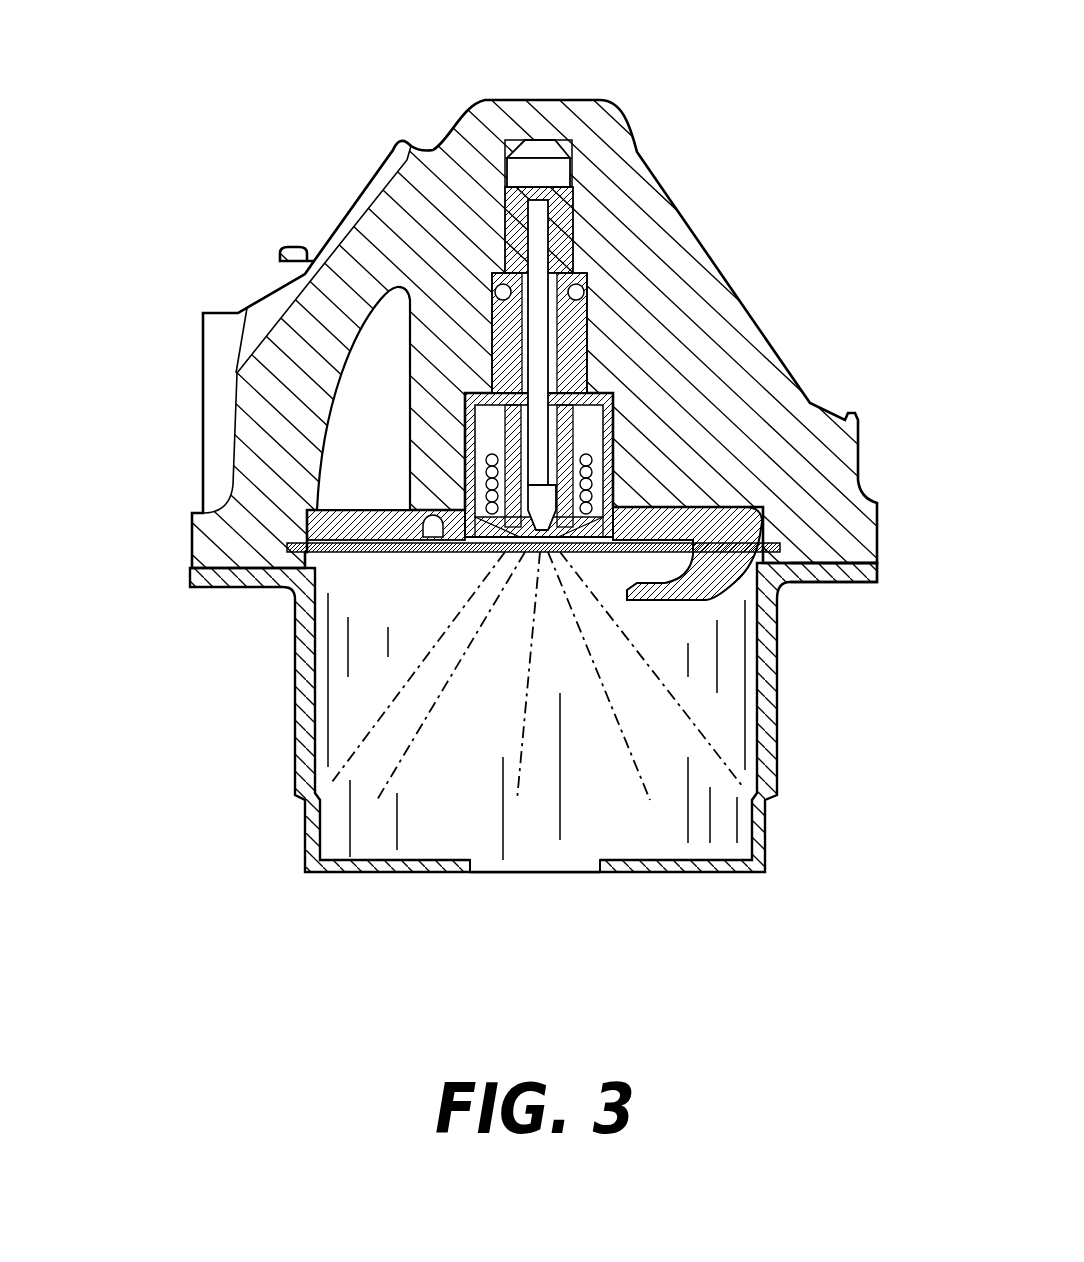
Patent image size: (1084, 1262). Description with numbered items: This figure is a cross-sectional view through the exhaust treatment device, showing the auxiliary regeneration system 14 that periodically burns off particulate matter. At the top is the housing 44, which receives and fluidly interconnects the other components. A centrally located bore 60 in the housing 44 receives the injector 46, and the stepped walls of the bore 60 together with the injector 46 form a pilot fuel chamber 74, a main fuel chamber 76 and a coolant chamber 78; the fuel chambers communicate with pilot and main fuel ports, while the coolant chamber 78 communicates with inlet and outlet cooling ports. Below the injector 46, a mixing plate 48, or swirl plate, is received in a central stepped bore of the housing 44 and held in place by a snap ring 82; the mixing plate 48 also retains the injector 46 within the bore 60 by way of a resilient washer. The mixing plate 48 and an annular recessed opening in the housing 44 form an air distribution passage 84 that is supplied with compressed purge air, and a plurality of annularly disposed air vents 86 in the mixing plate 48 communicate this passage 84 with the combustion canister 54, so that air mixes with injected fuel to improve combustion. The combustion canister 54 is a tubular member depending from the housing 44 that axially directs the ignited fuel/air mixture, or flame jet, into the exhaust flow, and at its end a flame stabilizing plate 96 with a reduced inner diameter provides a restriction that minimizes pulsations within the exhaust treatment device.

The auxiliary regeneration system 14 is at (484, 605).
The housing 44 is at (728, 426).
The injector 46 is at (652, 272).
The mixing plate 48 is at (687, 553).
The combustion canister 54 is at (533, 752).
The centrally located bore 60 is at (519, 134).
The pilot fuel chamber 74 is at (557, 173).
The main fuel chamber 76 is at (570, 257).
The coolant chamber 78 is at (575, 340).
The snap ring 82 is at (778, 580).
The air distribution passage 84 is at (381, 451).
The air vents 86 is at (440, 530).
The flame stabilizing plate 96 is at (660, 873).